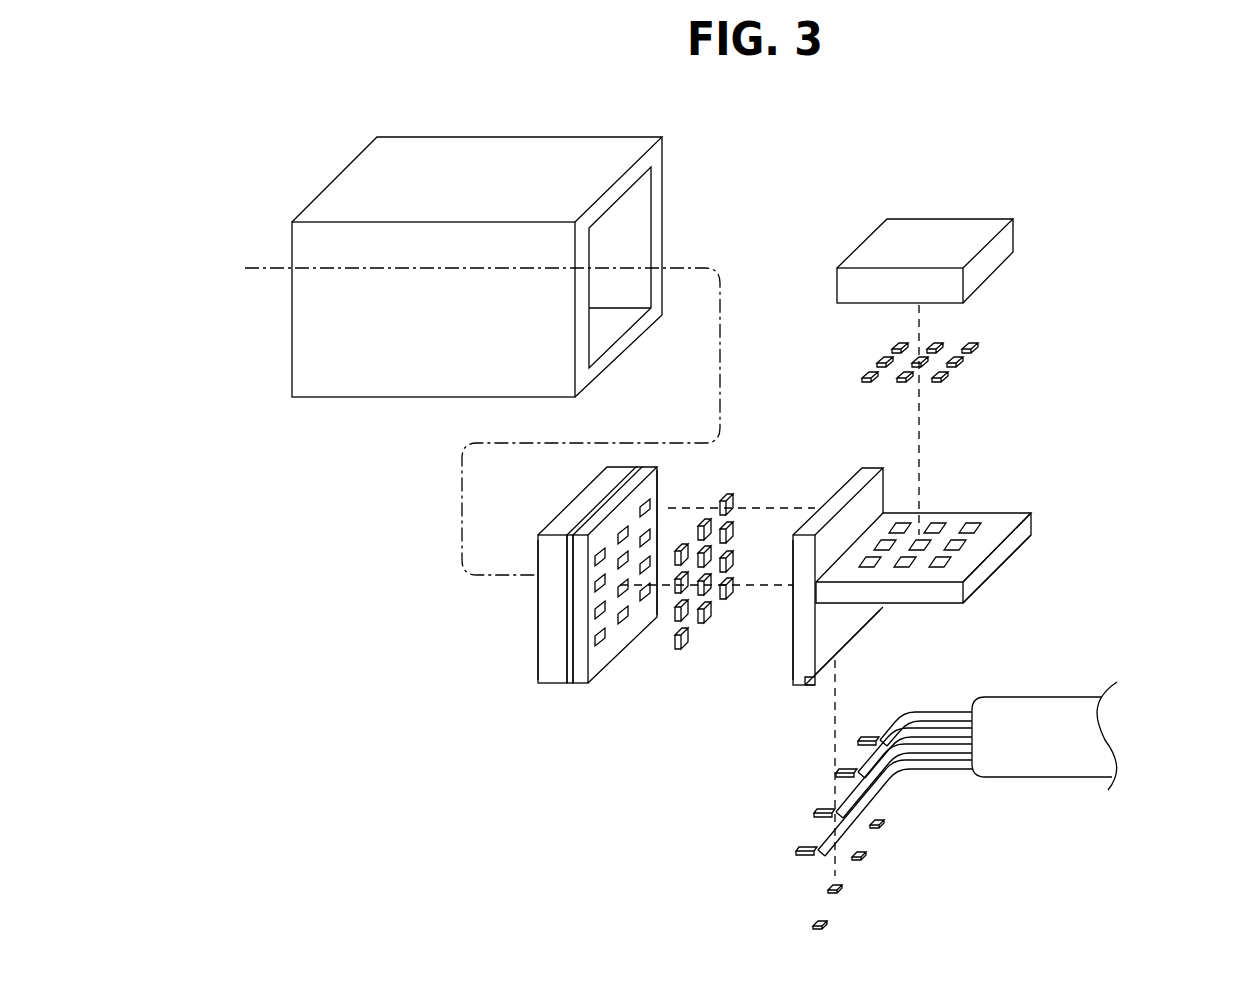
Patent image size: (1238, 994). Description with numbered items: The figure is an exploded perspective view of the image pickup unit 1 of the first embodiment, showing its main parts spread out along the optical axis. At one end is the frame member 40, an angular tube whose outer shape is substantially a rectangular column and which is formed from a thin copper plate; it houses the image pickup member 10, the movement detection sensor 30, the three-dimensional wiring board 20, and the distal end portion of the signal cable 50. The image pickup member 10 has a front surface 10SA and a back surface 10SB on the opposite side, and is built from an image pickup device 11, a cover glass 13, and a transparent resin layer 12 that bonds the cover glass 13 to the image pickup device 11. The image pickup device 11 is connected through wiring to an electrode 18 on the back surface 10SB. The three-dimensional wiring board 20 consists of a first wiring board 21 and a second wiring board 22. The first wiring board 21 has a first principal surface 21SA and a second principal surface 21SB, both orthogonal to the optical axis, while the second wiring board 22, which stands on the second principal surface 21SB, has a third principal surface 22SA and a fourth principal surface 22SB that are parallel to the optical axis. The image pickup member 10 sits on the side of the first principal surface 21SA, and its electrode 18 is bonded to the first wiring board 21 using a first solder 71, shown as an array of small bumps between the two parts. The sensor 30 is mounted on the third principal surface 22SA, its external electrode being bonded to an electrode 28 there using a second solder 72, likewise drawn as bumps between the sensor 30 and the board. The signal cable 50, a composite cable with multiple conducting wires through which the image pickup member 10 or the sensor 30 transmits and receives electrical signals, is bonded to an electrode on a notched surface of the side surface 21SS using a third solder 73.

The image pickup unit 1 is at (1094, 189).
The frame member 40 is at (528, 137).
The movement detection sensor 30 is at (930, 219).
The second solder 72 is at (985, 355).
The image pickup member 10 is at (633, 760).
The image pickup device 11 is at (580, 683).
The transparent resin layer 12 is at (568, 683).
The cover glass 13 is at (547, 683).
The electrode 18 is at (600, 643).
The front surface 10SA is at (530, 648).
The back surface 10SB is at (660, 491).
The first solder 71 is at (676, 641).
The three-dimensional wiring board 20 is at (803, 405).
The first wiring board 21 is at (847, 483).
The second wiring board 22 is at (893, 510).
The electrode 28 is at (978, 522).
The first principal surface 21SA is at (786, 651).
The second principal surface 21SB is at (842, 629).
The side surface 21SS is at (803, 696).
The third principal surface 22SA is at (998, 508).
The fourth principal surface 22SB is at (999, 583).
The signal cable 50 is at (1065, 697).
The third solder 73 is at (845, 889).